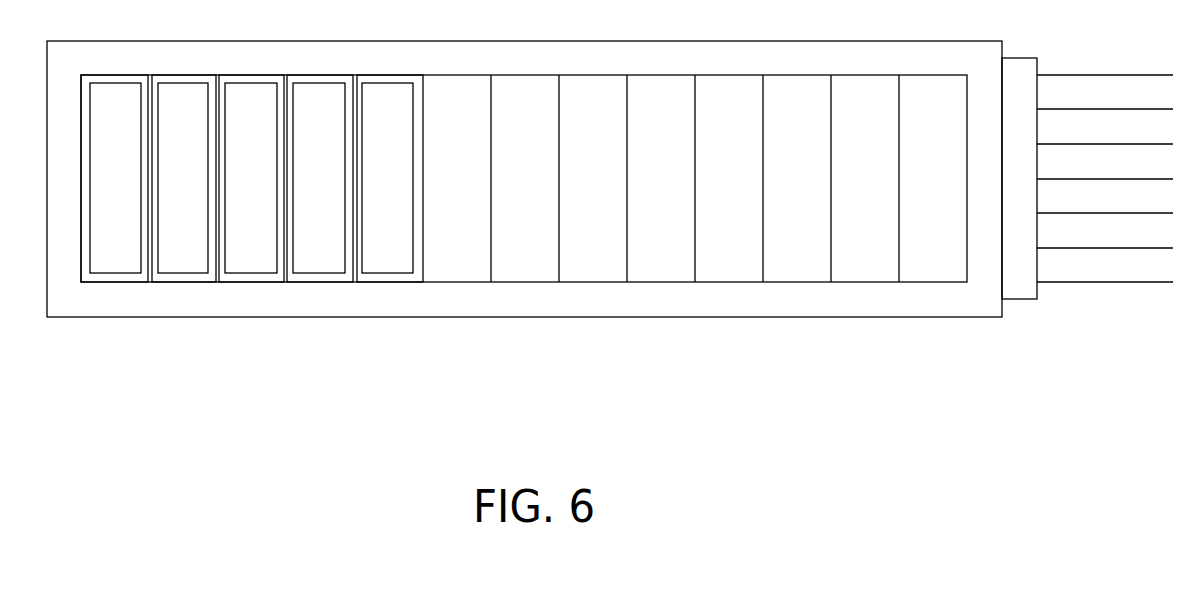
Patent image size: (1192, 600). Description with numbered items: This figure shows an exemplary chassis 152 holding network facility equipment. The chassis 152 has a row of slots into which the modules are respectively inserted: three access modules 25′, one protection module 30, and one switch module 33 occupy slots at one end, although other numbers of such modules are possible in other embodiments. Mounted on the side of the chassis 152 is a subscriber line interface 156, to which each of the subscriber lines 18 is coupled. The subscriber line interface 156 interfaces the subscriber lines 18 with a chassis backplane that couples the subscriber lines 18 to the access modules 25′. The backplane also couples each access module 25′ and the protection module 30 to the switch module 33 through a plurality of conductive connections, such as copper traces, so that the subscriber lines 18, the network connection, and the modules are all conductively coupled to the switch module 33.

The chassis 152 is at (626, 41).
The access module 25′ is at (99, 83).
The protection module 30 is at (303, 83).
The switch module 33 is at (370, 83).
The subscriber line interface 156 is at (1018, 58).
The subscriber lines 18 is at (1049, 64).